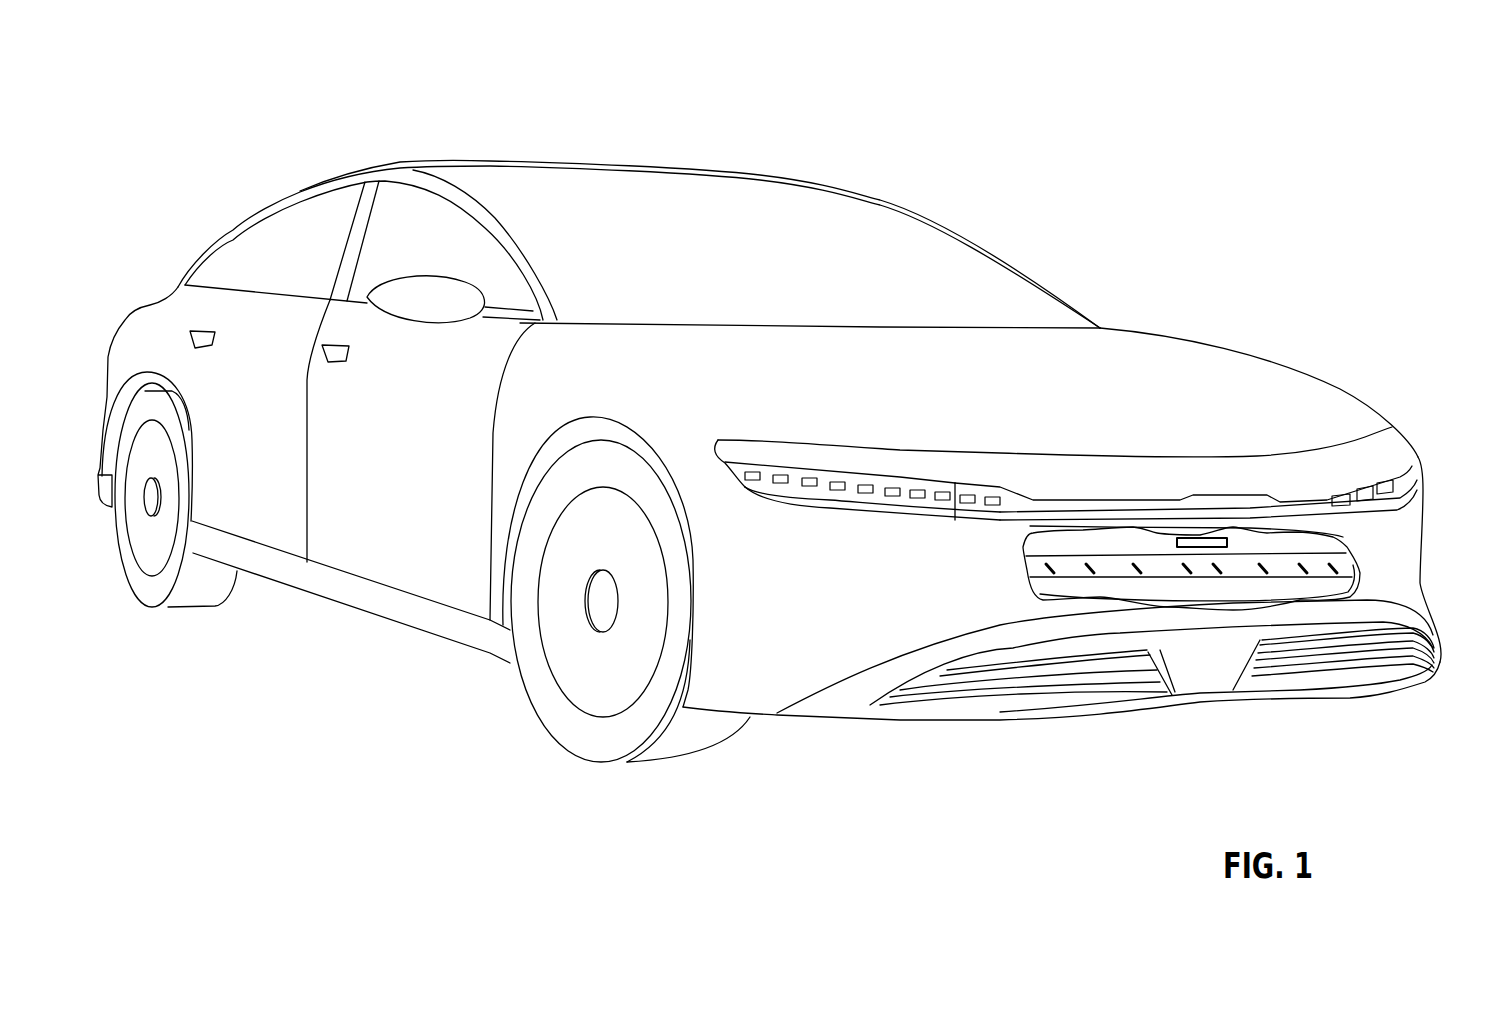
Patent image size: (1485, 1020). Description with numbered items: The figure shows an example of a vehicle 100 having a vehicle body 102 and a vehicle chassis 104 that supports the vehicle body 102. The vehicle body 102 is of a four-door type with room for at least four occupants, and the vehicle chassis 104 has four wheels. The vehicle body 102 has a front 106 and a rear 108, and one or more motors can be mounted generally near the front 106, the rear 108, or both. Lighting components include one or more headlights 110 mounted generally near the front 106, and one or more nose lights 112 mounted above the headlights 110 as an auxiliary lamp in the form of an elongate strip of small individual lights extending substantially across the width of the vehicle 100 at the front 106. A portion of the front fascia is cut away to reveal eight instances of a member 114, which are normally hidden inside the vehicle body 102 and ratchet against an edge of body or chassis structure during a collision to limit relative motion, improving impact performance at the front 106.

The vehicle 100 is at (1252, 106).
The vehicle body 102 is at (1120, 328).
The vehicle chassis 104 is at (353, 655).
The front 106 is at (1430, 420).
The rear 108 is at (154, 267).
The headlights 110 is at (837, 487).
The nose lights 112 is at (955, 515).
The member 114 is at (1050, 568).